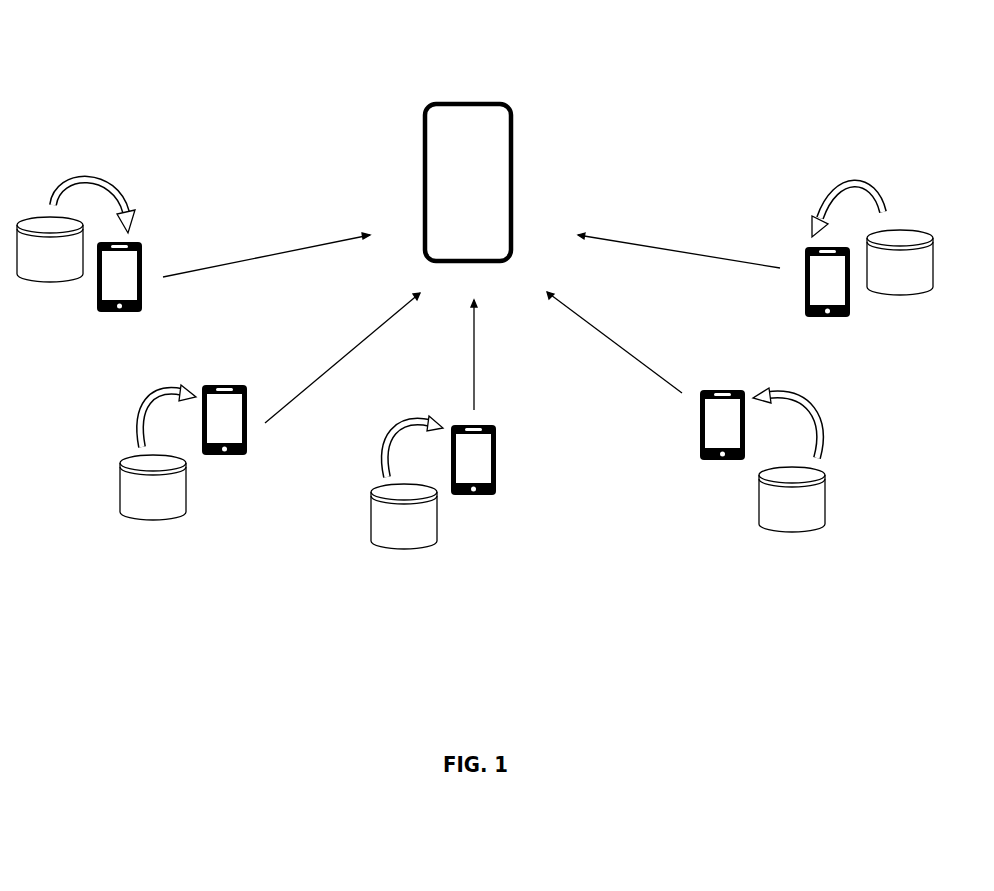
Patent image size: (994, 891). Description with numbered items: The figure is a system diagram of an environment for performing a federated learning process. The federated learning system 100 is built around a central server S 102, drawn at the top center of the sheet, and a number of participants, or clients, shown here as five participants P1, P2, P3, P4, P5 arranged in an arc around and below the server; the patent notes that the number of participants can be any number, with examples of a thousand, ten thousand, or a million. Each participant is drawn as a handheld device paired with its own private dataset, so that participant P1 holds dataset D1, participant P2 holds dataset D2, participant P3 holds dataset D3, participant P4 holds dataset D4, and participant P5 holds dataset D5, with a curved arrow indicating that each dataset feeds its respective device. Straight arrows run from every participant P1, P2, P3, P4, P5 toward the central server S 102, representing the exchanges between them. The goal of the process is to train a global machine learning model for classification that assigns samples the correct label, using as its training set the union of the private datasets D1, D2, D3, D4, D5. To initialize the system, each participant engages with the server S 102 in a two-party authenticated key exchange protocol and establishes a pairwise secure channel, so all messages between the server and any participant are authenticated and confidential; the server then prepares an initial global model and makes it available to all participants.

The federated learning system 100 is at (348, 58).
The central server 102 is at (508, 172).
The central server S is at (472, 172).
The participant P1 is at (119, 294).
The participant P2 is at (224, 442).
The participant P3 is at (473, 482).
The participant P4 is at (722, 443).
The participant P5 is at (827, 299).
The private dataset D1 is at (50, 249).
The private dataset D2 is at (153, 487).
The private dataset D3 is at (404, 516).
The private dataset D4 is at (792, 499).
The private dataset D5 is at (900, 262).